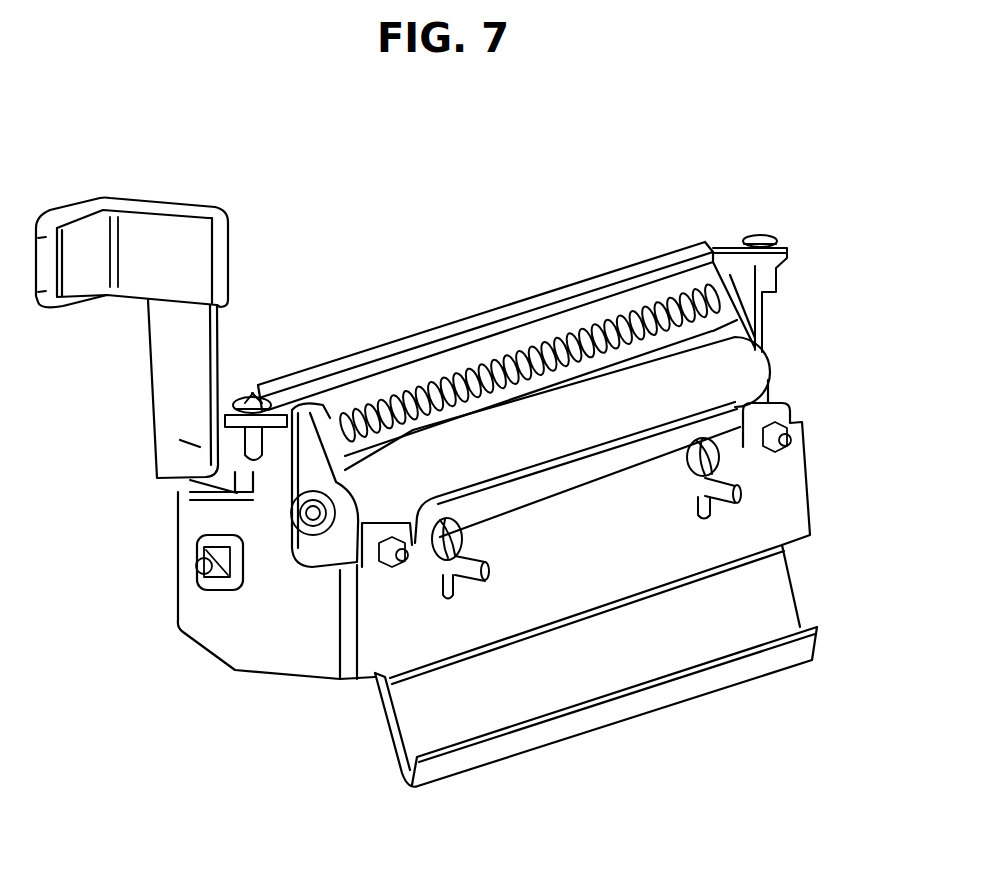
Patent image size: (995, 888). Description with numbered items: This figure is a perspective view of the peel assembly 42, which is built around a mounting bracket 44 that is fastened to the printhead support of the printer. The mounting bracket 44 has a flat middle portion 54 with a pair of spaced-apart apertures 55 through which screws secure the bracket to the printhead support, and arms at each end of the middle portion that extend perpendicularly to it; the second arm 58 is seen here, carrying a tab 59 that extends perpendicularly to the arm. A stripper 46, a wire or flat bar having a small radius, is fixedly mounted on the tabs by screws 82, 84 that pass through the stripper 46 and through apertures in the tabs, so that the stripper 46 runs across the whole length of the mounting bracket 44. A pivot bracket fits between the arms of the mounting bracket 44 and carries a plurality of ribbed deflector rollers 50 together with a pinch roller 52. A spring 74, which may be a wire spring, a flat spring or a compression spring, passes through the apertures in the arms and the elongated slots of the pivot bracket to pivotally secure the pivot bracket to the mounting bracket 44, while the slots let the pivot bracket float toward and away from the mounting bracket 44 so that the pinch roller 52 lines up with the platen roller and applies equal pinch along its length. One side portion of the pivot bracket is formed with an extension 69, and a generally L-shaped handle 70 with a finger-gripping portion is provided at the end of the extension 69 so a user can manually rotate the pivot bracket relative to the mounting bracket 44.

The peel assembly 42 is at (483, 293).
The mounting bracket 44 is at (590, 663).
The stripper 46 is at (638, 273).
The ribbed deflector rollers 50 is at (390, 415).
The pinch roller 52 is at (712, 378).
The flat middle portion 54 is at (707, 577).
The apertures 55 is at (462, 545).
The second arm 58 is at (220, 615).
The tab 59 is at (304, 410).
The extension 69 is at (172, 370).
The handle 70 is at (143, 230).
The spring 74 is at (205, 566).
The screw 82 is at (762, 238).
The screw 84 is at (253, 400).